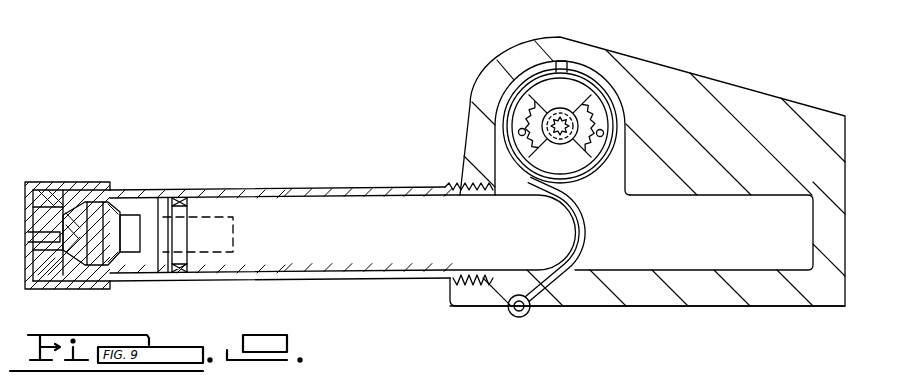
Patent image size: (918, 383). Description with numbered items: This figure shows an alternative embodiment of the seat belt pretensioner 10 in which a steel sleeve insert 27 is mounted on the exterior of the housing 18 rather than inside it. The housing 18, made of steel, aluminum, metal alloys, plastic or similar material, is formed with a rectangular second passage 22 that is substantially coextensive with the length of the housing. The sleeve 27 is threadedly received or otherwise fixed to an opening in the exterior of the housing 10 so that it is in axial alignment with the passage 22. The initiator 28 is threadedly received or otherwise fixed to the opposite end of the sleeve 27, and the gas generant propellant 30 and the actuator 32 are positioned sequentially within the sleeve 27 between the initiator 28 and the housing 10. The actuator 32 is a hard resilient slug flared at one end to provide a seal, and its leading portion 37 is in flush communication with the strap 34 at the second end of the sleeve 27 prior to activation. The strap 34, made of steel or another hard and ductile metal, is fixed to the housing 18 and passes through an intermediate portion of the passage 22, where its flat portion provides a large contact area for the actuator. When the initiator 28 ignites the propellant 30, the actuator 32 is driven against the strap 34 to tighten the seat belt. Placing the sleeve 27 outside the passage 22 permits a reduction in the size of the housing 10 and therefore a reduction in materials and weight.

The pretensioner 10 is at (704, 68).
The housing 18 is at (723, 308).
The second rectangular cylindrical passage 22 is at (637, 231).
The steel sleeve insert 27 is at (377, 188).
The initiator 28 is at (78, 218).
The gas generant propellant 30 is at (207, 217).
The actuator 32 is at (289, 228).
The strap 34 is at (557, 275).
The leading portion of the actuator 37 is at (558, 222).